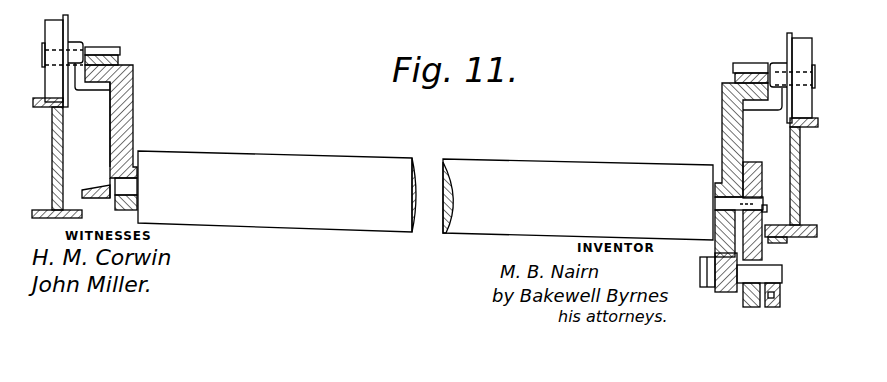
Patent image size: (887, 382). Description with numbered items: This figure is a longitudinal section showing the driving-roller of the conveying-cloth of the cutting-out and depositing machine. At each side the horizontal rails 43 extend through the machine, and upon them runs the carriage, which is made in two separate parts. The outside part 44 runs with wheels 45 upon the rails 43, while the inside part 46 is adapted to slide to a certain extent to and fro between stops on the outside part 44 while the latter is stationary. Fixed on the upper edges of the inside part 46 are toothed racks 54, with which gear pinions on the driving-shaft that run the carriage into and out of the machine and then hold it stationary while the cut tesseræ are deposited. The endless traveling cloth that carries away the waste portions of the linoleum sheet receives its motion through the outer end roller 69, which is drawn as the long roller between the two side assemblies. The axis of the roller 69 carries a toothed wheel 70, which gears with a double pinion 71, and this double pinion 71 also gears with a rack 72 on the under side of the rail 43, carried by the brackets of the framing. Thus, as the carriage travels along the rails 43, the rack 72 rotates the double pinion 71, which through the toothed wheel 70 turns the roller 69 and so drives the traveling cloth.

The horizontal rails 43 is at (422, 167).
The outside part of carriage 44 is at (112, 140).
The wheels 45 is at (58, 33).
The inside part of carriage 46 is at (122, 121).
The toothed racks 54 is at (100, 52).
The outer end roller 69 is at (425, 195).
The toothed wheel 70 is at (762, 173).
The double pinion 71 is at (780, 290).
The rack 72 is at (787, 242).